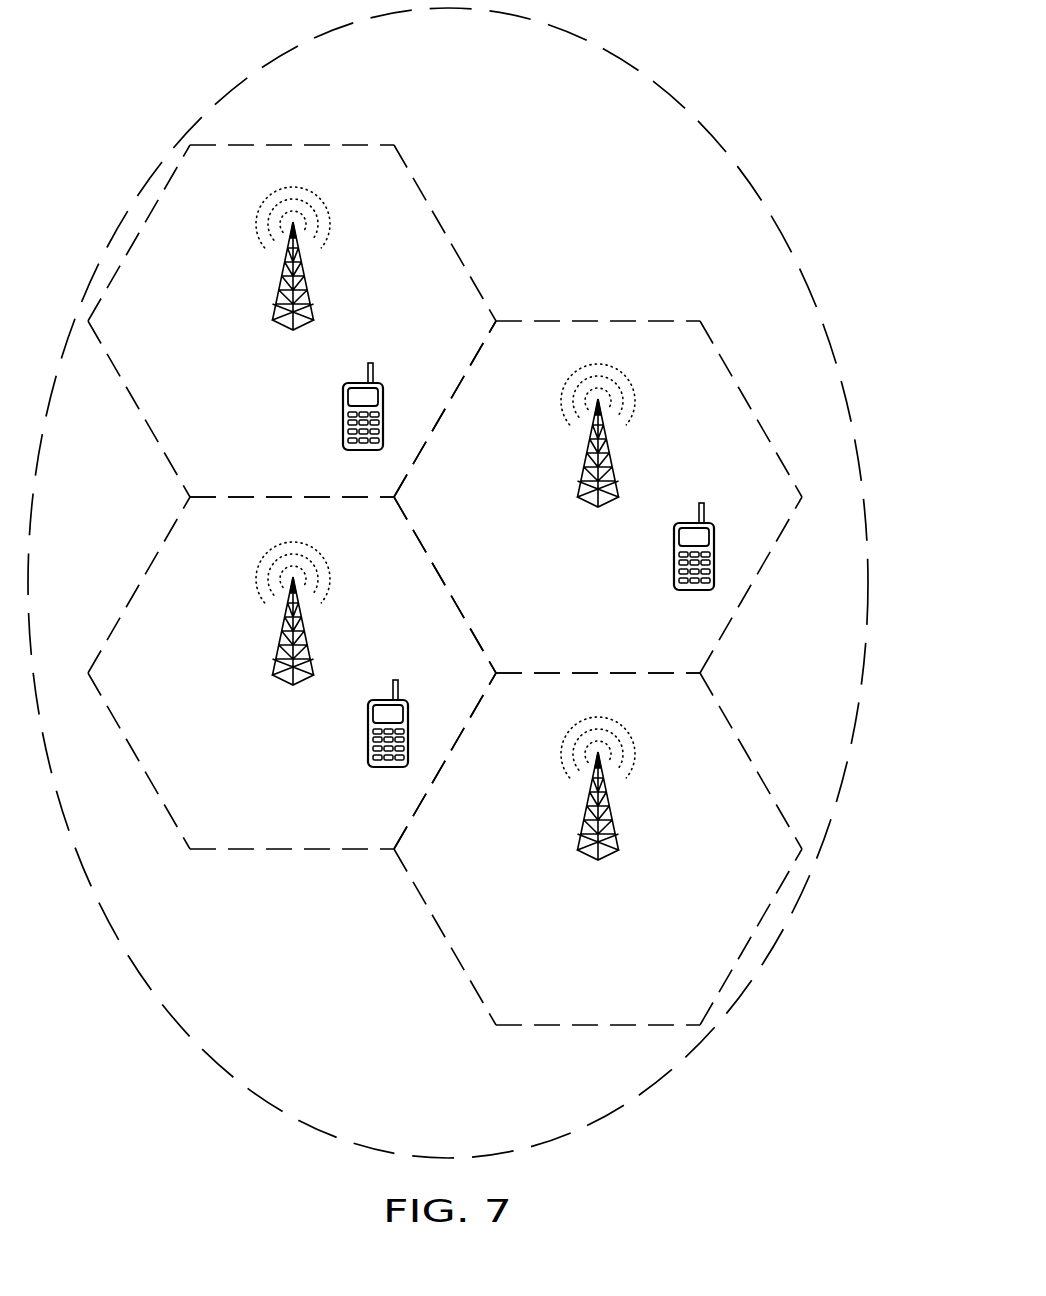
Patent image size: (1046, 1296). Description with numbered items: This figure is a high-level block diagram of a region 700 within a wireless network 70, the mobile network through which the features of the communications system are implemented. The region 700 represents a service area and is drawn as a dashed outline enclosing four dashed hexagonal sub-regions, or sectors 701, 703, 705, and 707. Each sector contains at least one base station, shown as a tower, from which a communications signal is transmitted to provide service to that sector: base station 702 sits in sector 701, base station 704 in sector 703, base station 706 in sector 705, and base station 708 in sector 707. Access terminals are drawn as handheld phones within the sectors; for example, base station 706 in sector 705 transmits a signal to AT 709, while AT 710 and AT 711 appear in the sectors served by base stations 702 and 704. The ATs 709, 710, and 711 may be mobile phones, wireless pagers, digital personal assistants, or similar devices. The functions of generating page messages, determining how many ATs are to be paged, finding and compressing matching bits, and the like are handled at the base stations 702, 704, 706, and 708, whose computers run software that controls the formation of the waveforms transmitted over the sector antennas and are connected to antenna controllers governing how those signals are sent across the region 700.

The wireless network 70 is at (126, 60).
The region 700 is at (652, 78).
The sector 701 is at (447, 235).
The base station 702 is at (277, 281).
The sector 703 is at (260, 852).
The base station 704 is at (275, 633).
The sector 705 is at (752, 585).
The base station 706 is at (580, 456).
The sector 707 is at (447, 938).
The base station 708 is at (582, 808).
The AT 709 is at (672, 560).
The AT 710 is at (342, 419).
The AT 711 is at (366, 740).